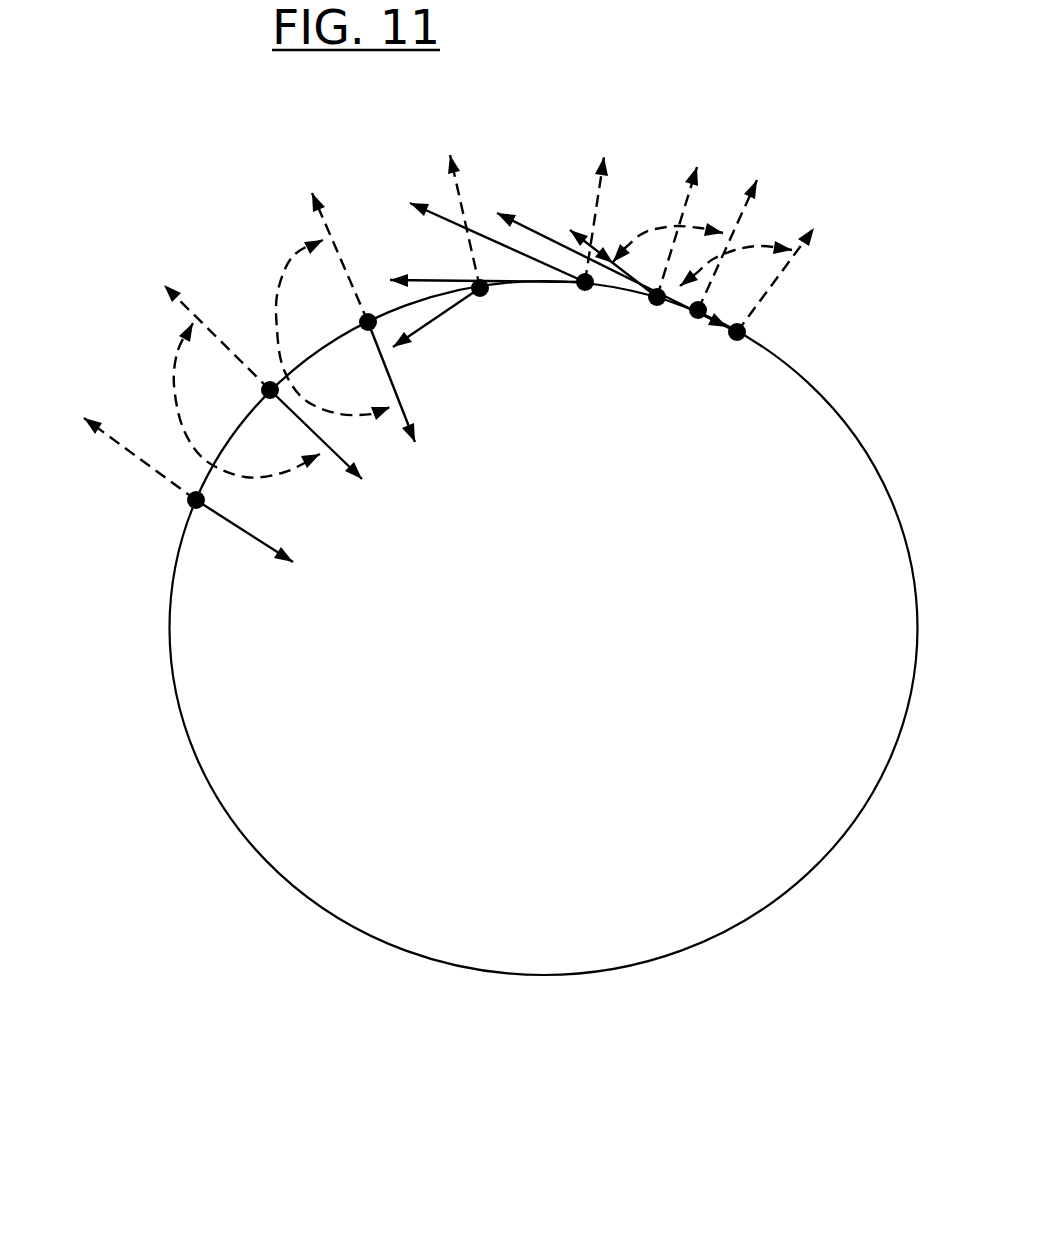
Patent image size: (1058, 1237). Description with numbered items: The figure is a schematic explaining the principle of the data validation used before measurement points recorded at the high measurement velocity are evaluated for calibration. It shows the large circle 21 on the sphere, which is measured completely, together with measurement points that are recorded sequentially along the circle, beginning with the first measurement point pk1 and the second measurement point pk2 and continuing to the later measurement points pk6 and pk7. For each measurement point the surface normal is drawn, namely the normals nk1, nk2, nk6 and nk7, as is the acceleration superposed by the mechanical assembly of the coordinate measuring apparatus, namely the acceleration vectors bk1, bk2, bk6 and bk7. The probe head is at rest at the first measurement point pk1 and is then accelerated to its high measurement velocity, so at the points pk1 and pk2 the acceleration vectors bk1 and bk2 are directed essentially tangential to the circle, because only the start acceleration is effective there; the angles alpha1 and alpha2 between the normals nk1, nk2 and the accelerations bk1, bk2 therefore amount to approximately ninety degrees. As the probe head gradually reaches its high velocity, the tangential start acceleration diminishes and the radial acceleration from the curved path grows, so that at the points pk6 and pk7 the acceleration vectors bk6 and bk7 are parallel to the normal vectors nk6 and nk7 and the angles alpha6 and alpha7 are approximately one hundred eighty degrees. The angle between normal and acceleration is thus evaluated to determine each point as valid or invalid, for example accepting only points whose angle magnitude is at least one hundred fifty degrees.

The large circle 21 is at (422, 950).
The first measurement point pk1 is at (745, 334).
The second measurement point pk2 is at (690, 312).
The measurement point pk6 is at (368, 322).
The measurement point pk7 is at (271, 400).
The surface normal nk1 is at (765, 298).
The surface normal nk2 is at (740, 222).
The normal vector nk6 is at (342, 273).
The normal vector nk7 is at (183, 303).
The acceleration vector bk1 is at (595, 242).
The acceleration vector bk2 is at (540, 233).
The acceleration vector bk6 is at (393, 378).
The acceleration vector bk7 is at (347, 458).
The angle alpha1 is at (747, 250).
The angle alpha2 is at (643, 230).
The angle alpha6 is at (335, 357).
The angle alpha7 is at (250, 477).